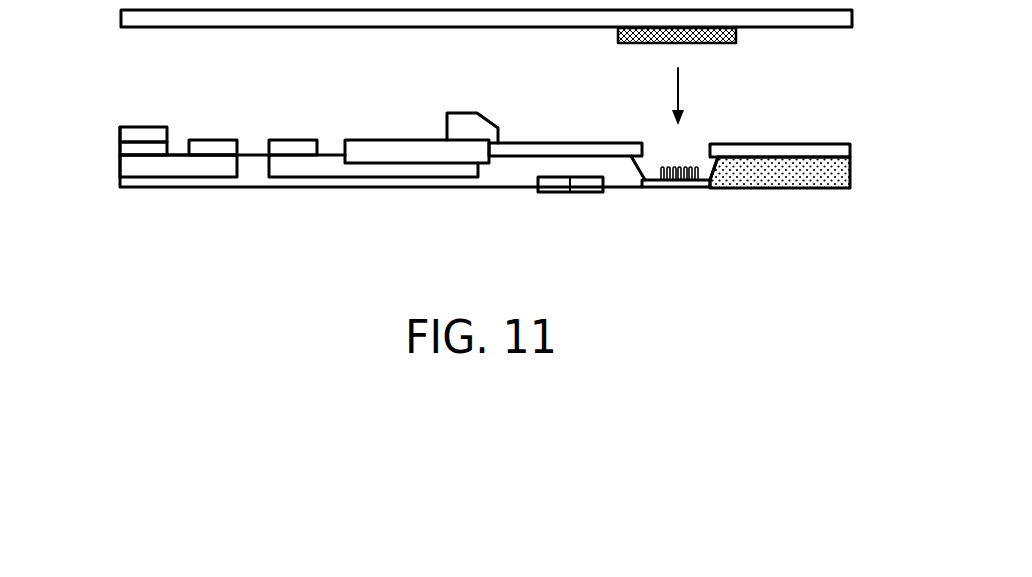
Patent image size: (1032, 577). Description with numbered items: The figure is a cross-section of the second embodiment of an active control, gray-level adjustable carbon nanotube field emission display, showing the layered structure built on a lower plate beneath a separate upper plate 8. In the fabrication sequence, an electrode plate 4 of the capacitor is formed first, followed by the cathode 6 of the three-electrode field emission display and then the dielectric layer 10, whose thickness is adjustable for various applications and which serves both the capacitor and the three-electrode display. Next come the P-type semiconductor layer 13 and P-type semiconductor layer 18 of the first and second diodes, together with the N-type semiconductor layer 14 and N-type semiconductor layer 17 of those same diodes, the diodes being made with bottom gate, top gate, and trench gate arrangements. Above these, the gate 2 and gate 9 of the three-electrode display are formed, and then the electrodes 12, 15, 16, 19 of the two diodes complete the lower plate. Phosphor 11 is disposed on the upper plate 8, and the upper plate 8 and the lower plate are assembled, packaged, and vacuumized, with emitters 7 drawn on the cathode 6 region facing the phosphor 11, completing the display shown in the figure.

The gate 2 is at (567, 148).
The electrode plate 4 is at (570, 192).
The cathode 6 is at (680, 187).
The bumps 7 is at (662, 168).
The upper plate 8 is at (852, 19).
The gate 9 is at (850, 148).
The dielectric layer 10 is at (850, 175).
The phosphor 11 is at (737, 36).
The electrode 12 is at (143, 133).
The P-type semiconductor layer 13 is at (130, 168).
The N-type semiconductor layer 14 is at (130, 147).
The electrode 15 is at (210, 148).
The electrode 16 is at (293, 147).
The N-type semiconductor layer 17 is at (392, 147).
The P-type semiconductor layer 18 is at (420, 163).
The electrode 19 is at (467, 120).